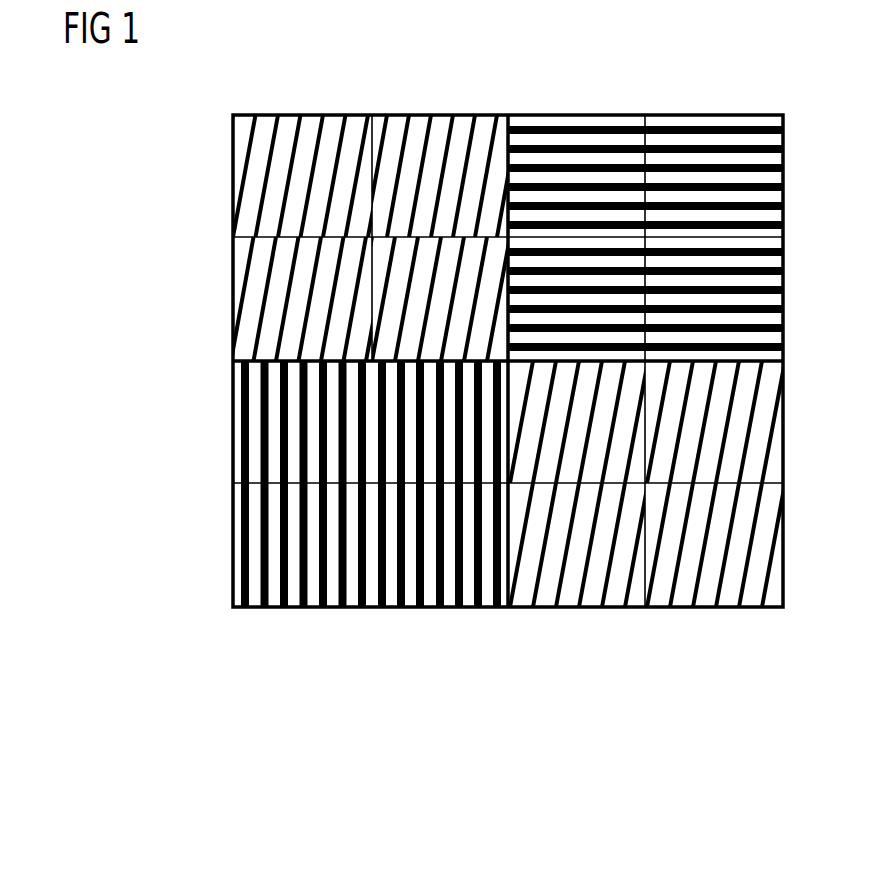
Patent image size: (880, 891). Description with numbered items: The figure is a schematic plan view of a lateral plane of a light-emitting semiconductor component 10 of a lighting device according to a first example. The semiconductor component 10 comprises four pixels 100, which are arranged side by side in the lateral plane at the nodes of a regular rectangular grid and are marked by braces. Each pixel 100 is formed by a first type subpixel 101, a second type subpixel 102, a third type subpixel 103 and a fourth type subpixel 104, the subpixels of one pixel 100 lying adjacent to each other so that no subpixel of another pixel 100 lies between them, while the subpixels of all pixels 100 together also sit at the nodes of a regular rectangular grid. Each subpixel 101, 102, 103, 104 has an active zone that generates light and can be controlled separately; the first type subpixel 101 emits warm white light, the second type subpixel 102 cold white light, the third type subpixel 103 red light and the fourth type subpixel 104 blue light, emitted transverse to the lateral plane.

The semiconductor component 10 is at (184, 293).
The pixel 100 is at (783, 630).
The first type subpixel 101 is at (275, 150).
The second type subpixel 102 is at (318, 265).
The third type subpixel 103 is at (403, 150).
The fourth type subpixel 104 is at (447, 262).